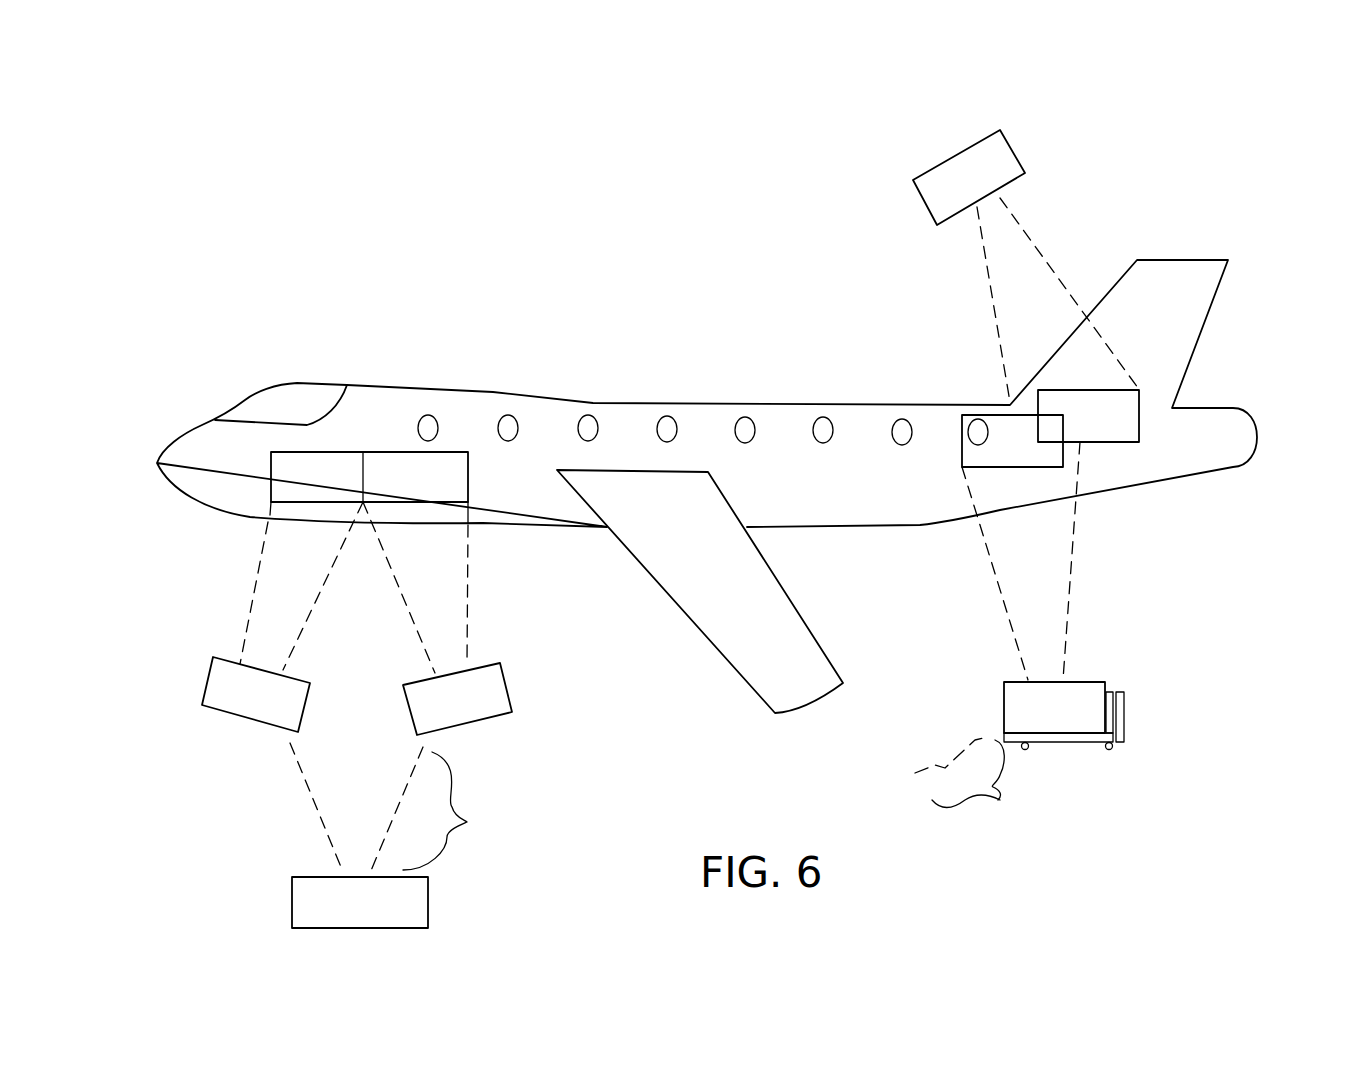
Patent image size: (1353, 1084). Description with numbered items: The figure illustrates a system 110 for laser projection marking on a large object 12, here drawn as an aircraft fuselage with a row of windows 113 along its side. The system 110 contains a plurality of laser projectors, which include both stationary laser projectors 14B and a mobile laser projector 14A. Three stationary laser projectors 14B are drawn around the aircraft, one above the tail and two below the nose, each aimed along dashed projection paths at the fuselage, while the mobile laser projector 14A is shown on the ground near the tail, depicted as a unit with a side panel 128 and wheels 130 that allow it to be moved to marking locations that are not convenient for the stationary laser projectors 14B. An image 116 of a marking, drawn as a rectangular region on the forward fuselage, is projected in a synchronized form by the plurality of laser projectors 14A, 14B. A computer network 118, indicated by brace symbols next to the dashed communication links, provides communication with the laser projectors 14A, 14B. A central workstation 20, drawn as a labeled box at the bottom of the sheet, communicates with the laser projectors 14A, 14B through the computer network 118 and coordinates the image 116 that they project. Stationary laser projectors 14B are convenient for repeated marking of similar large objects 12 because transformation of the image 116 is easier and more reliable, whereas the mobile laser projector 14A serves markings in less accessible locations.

The system 110 is at (774, 167).
The large object 12 is at (743, 405).
The windows 113 is at (665, 415).
The image 116 is at (350, 452).
The stationary laser projectors 14B is at (1012, 148).
The mobile laser projectors 14A is at (1112, 692).
The sensor panel 128 is at (1124, 717).
The wheels 130 is at (1027, 749).
The computer network 118 is at (717, 803).
The central workstation 20 is at (430, 895).